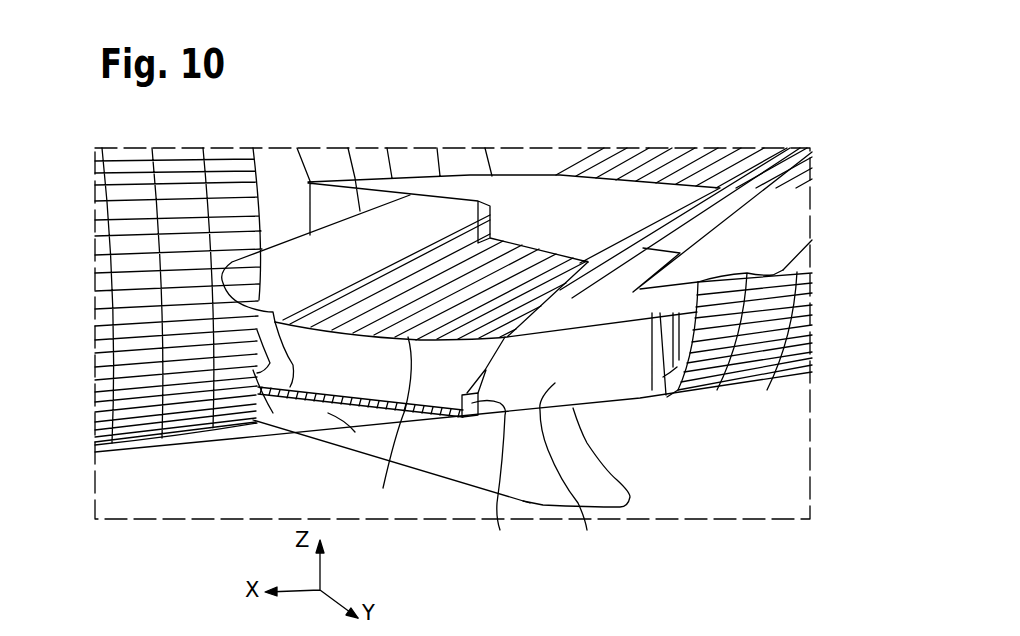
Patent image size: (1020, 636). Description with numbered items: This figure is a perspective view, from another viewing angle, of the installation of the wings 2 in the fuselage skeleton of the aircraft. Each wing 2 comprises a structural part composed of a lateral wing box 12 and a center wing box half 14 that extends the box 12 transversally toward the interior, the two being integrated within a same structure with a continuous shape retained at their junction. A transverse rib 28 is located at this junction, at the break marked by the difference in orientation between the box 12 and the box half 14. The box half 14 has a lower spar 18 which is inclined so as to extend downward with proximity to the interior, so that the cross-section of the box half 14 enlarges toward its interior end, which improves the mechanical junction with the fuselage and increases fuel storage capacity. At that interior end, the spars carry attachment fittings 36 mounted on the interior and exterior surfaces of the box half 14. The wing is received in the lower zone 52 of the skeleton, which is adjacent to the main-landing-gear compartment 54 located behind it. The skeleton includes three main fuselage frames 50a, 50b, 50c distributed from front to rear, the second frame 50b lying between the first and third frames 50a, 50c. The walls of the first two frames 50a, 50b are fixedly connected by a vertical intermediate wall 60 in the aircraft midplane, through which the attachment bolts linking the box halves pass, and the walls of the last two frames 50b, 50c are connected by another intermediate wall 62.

The wing 2 is at (435, 222).
The lateral wing box 12 is at (485, 285).
The center wing box half 14 is at (360, 368).
The lower spar 18 is at (260, 438).
The transverse rib 28 is at (390, 425).
The attachment fittings 36 is at (276, 415).
The first fuselage frame 50a is at (258, 371).
The second fuselage frame 50b is at (514, 440).
The third fuselage frame 50c is at (665, 400).
The lower zone 52 is at (253, 427).
The main-landing-gear compartment 54 is at (621, 363).
The intermediate wall 60 is at (336, 420).
The intermediate wall 62 is at (592, 480).